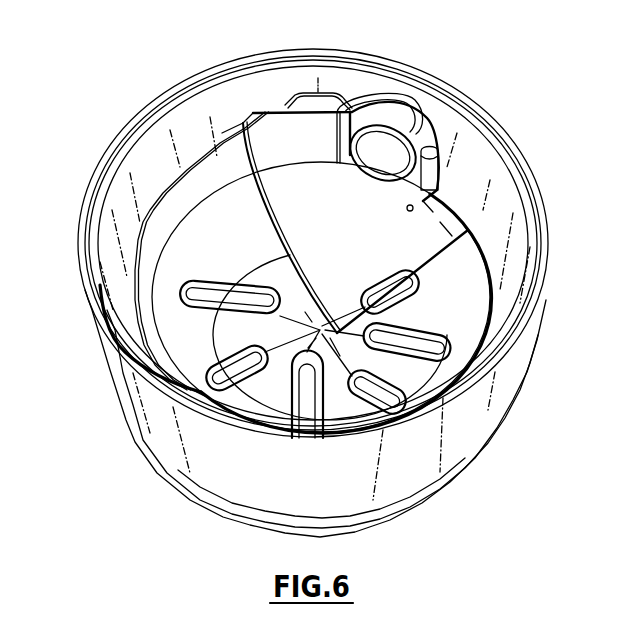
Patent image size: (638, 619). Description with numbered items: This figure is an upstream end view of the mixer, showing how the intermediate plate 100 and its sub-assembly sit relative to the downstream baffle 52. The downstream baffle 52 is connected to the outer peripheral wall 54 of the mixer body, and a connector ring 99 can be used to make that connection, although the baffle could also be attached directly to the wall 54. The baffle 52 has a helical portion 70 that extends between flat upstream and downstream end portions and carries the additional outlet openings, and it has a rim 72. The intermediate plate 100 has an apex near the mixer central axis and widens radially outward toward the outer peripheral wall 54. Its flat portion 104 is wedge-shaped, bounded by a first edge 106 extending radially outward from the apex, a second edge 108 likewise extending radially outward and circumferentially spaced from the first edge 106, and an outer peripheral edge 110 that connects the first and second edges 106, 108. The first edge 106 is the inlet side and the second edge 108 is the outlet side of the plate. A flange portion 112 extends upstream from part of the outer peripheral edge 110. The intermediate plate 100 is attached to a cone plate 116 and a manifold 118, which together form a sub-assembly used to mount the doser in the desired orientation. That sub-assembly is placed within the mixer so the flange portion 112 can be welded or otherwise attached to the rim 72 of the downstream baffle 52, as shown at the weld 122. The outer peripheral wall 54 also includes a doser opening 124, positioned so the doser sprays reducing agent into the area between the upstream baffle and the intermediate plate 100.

The downstream baffle 52 is at (500, 315).
The outer peripheral wall 54 is at (143, 167).
The helical portion 70 is at (235, 230).
The rim 72 is at (200, 163).
The connector ring 99 is at (137, 337).
The intermediate plate 100 is at (345, 177).
The flat portion 104 is at (355, 217).
The first edge 106 is at (405, 280).
The second edge 108 is at (282, 225).
The outer peripheral edge 110 is at (435, 220).
The flange portion 112 is at (272, 133).
The cone plate 116 is at (357, 120).
The manifold 118 is at (420, 127).
The weld 122 is at (233, 140).
The doser opening 124 is at (440, 128).